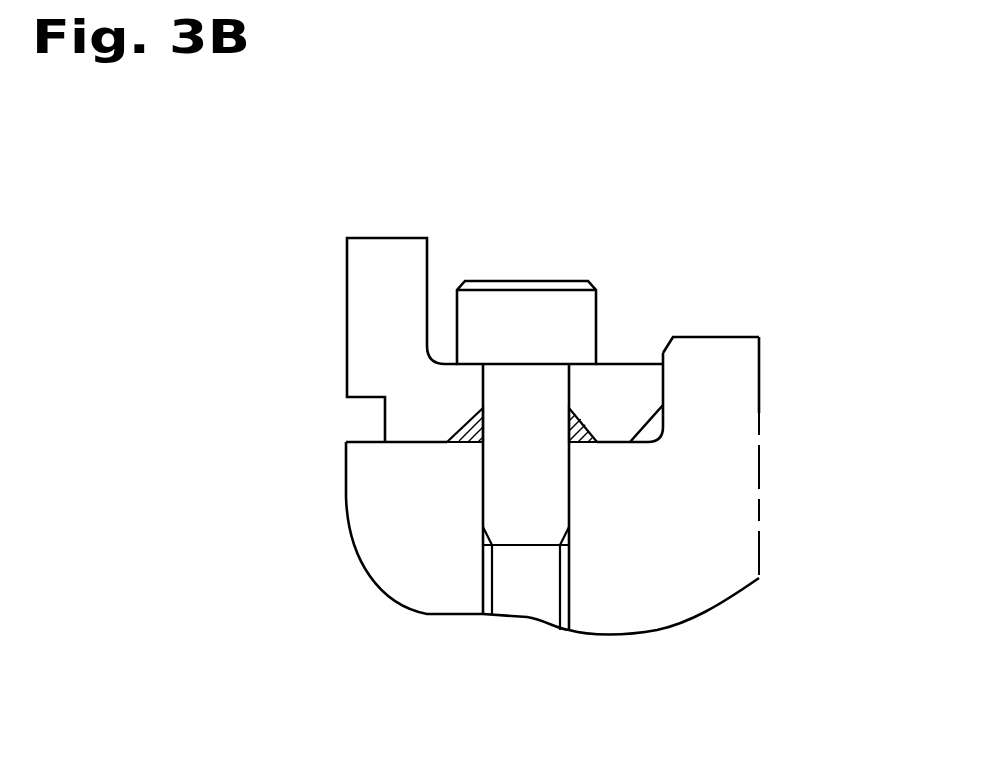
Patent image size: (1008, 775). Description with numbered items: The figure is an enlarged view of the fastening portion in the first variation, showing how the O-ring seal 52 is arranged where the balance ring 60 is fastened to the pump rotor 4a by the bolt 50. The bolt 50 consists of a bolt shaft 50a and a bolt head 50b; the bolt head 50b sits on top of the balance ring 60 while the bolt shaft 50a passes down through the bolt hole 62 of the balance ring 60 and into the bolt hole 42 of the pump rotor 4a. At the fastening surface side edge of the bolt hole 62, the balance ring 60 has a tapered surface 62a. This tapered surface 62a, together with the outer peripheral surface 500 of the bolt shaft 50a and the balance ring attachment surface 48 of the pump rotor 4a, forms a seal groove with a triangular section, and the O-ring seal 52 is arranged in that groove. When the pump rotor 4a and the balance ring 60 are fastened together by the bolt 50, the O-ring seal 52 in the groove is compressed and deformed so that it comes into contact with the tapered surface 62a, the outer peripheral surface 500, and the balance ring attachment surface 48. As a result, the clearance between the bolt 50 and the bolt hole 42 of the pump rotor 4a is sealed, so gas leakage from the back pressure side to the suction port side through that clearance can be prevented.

The bolt 50 is at (524, 359).
The bolt shaft 50a is at (518, 395).
The bolt head 50b is at (563, 307).
The balance ring 60 is at (378, 277).
The bolt hole 62 is at (569, 397).
The tapered surface 62a is at (450, 443).
The balance ring attachment surface 48 is at (360, 441).
The pump rotor 4a is at (723, 502).
The O-ring seal 52 is at (583, 443).
The outer peripheral surface 500 is at (483, 497).
The bolt hole 42 is at (568, 502).